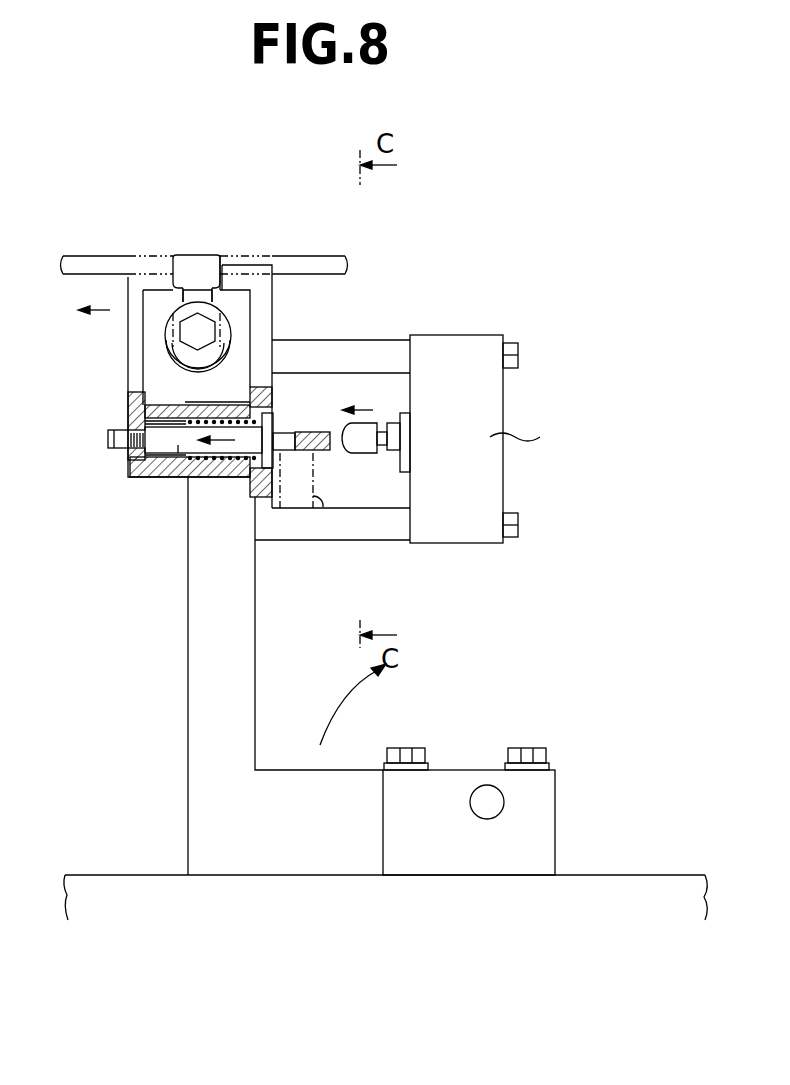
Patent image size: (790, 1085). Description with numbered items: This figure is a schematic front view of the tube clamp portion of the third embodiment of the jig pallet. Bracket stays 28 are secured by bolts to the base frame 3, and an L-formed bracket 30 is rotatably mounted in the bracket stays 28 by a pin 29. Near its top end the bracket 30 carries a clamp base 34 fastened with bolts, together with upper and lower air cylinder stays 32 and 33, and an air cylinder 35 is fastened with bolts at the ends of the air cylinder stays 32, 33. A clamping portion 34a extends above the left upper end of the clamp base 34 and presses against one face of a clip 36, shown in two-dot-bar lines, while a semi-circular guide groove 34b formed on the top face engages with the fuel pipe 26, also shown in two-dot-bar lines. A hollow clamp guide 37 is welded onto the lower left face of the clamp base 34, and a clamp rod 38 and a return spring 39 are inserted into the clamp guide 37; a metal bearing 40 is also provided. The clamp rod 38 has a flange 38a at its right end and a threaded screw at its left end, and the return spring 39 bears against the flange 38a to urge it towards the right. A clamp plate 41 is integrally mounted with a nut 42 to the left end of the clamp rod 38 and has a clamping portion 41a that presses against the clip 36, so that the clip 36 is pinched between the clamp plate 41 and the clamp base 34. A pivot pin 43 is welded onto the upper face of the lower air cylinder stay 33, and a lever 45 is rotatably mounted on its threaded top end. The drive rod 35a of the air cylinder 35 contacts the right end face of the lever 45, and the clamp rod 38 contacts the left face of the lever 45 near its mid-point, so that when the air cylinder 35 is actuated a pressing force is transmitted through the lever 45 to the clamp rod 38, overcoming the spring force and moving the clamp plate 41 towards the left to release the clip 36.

The base frame 3 is at (663, 888).
The fuel pipe 26 is at (128, 253).
The bracket stays 28 is at (538, 802).
The pin 29 is at (487, 795).
The L-formed bracket 30 is at (200, 779).
The upper air cylinder stay 32 is at (362, 347).
The lower air cylinder stay 33 is at (388, 530).
The clamp base 34 is at (265, 304).
The clamping portion 34a is at (214, 257).
The semi-circular guide groove 34b is at (236, 263).
The air cylinder 35 is at (492, 437).
The drive rod 35a is at (360, 452).
The clip 36 is at (194, 257).
The clamp guide 37 is at (163, 463).
The clamp rod 38 is at (180, 462).
The flange 38a is at (243, 505).
The return spring 39 is at (205, 470).
The metal bearing 40 is at (140, 478).
The clamp plate 41 is at (128, 343).
The clamping portion 41a is at (176, 255).
The nut 42 is at (122, 425).
The pivot pin 43 is at (310, 510).
The lever 45 is at (309, 430).